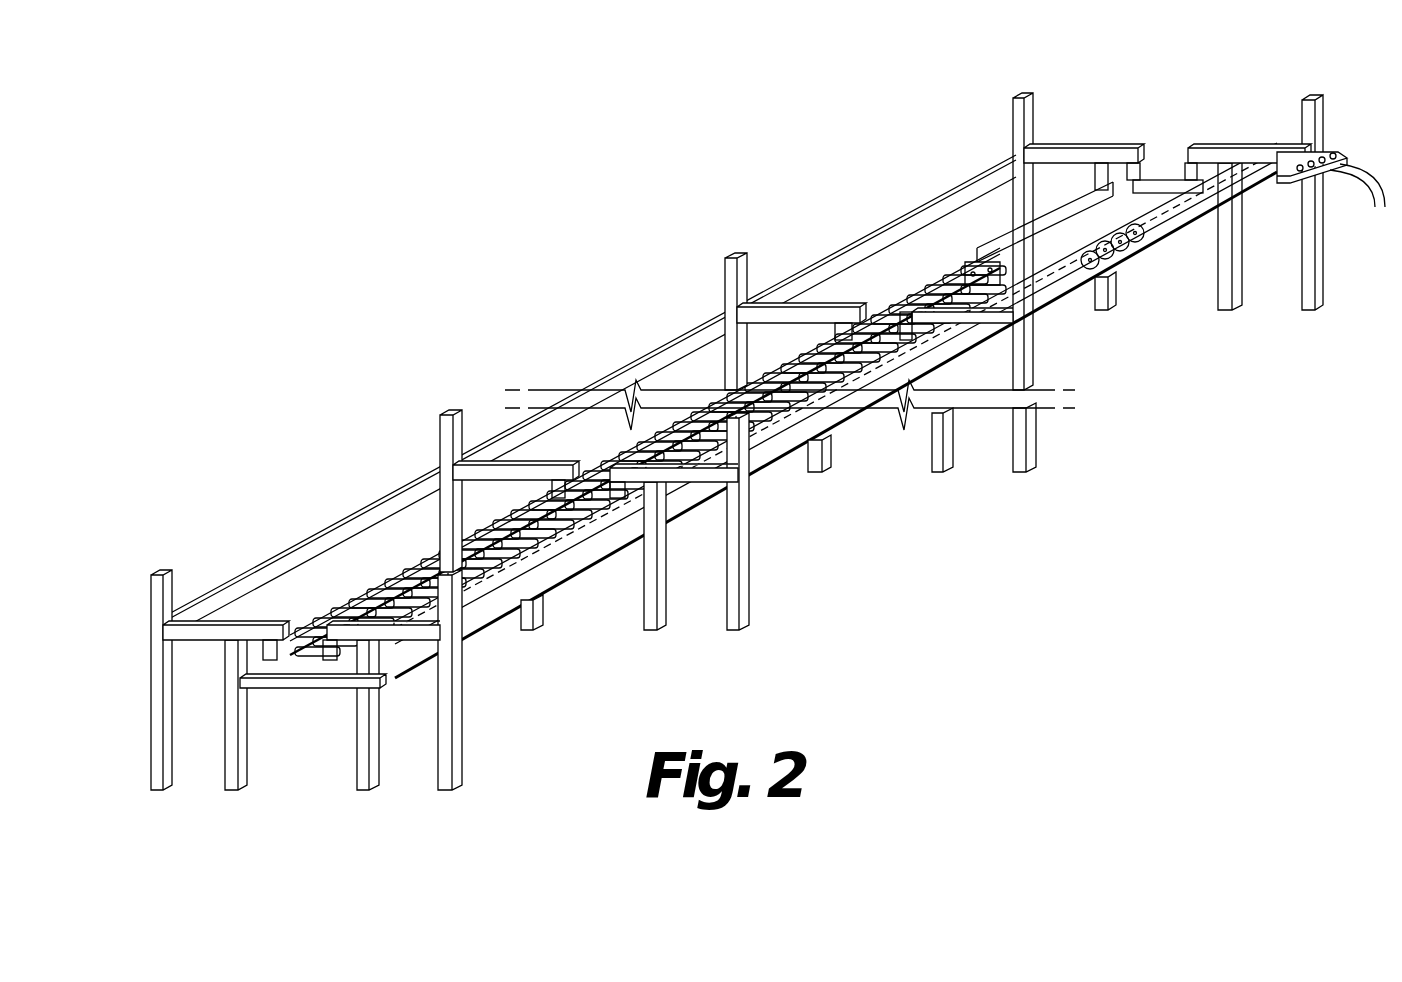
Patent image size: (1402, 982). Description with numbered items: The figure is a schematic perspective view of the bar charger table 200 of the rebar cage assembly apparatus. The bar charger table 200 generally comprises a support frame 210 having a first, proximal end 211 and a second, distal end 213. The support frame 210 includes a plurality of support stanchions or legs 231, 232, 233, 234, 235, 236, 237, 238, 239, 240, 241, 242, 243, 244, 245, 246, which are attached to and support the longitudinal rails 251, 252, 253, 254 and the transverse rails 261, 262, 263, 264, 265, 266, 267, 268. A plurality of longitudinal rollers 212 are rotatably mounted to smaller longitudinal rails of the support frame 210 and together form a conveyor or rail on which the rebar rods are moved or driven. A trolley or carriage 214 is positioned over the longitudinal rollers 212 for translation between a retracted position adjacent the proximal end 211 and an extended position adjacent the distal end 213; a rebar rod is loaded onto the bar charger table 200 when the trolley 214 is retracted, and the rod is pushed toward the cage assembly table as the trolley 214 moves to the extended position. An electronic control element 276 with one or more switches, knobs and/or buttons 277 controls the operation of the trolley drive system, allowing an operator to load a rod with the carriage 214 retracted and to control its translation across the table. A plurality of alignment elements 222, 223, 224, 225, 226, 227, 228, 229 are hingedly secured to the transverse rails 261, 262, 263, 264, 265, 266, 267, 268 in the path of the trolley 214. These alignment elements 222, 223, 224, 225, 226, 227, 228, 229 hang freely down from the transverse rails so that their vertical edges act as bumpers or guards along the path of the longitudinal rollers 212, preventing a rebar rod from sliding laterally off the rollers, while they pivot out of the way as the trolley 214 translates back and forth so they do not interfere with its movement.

The bar charger table 200 is at (741, 435).
The support frame 210 is at (906, 214).
The first, proximal end 211 is at (1208, 160).
The longitudinal rollers 212 is at (400, 598).
The second, distal end 213 is at (193, 678).
The trolley 214 is at (1003, 243).
The alignment element 222 is at (270, 660).
The alignment element 223 is at (328, 665).
The alignment element 224 is at (560, 475).
The alignment element 225 is at (615, 500).
The alignment element 226 is at (842, 335).
The alignment element 227 is at (912, 325).
The alignment element 228 is at (1137, 180).
The alignment element 229 is at (1175, 158).
The leg 231 is at (165, 765).
The leg 232 is at (243, 765).
The leg 233 is at (373, 765).
The leg 234 is at (455, 765).
The leg 235 is at (440, 520).
The leg 236 is at (540, 605).
The leg 237 is at (662, 605).
The leg 238 is at (745, 605).
The leg 239 is at (728, 355).
The leg 240 is at (827, 445).
The leg 241 is at (948, 440).
The leg 242 is at (1027, 445).
The leg 243 is at (1016, 118).
The leg 244 is at (1103, 290).
The leg 245 is at (1237, 290).
The leg 246 is at (1318, 290).
The longitudinal rail 251 is at (234, 600).
The longitudinal rail 252 is at (322, 640).
The longitudinal rail 253 is at (395, 670).
The longitudinal rail 254 is at (590, 565).
The transverse rail 261 is at (207, 635).
The transverse rail 262 is at (420, 650).
The transverse rail 263 is at (498, 470).
The transverse rail 264 is at (690, 478).
The transverse rail 265 is at (793, 305).
The transverse rail 266 is at (988, 313).
The transverse rail 267 is at (1090, 156).
The transverse rail 268 is at (1262, 150).
The electronic control element 276 is at (1350, 162).
The switches, knobs and/or buttons 277 is at (1373, 212).